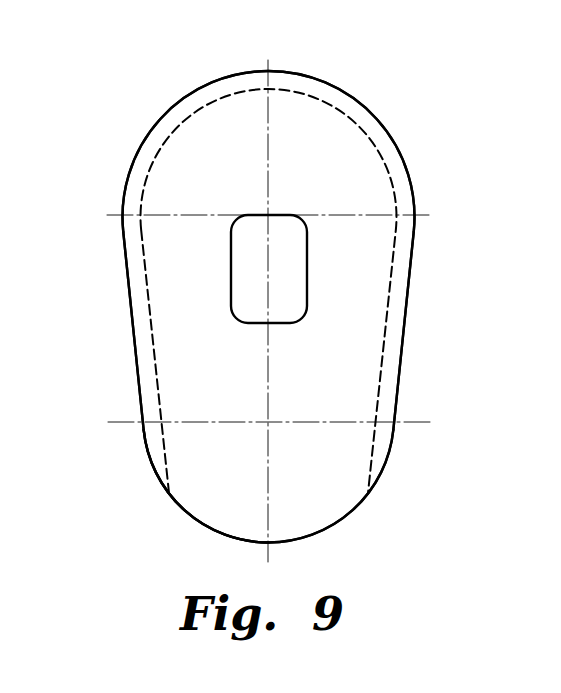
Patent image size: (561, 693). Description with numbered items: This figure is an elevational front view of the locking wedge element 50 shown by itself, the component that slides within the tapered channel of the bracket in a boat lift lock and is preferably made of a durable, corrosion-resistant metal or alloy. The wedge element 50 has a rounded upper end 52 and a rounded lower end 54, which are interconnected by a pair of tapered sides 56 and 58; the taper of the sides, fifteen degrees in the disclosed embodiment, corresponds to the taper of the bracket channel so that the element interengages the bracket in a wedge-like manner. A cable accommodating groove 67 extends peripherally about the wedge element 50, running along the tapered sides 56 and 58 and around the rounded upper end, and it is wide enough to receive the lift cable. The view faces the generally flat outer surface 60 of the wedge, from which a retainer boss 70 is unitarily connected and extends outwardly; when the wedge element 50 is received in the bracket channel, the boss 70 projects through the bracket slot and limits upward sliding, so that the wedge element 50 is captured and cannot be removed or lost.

The wedge element 50 is at (148, 135).
The rounded upper end 52 is at (323, 82).
The rounded lower end 54 is at (317, 534).
The tapered side 56 is at (132, 318).
The tapered side 58 is at (401, 366).
The outer surface 60 is at (230, 498).
The cable accommodating groove 67 is at (377, 148).
The retainer boss 70 is at (307, 272).